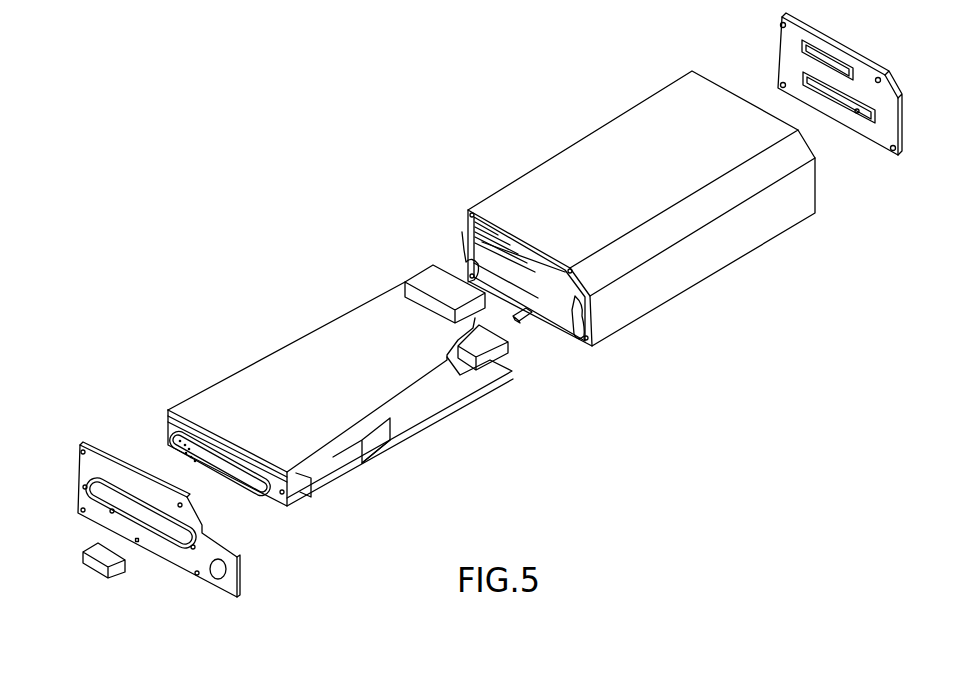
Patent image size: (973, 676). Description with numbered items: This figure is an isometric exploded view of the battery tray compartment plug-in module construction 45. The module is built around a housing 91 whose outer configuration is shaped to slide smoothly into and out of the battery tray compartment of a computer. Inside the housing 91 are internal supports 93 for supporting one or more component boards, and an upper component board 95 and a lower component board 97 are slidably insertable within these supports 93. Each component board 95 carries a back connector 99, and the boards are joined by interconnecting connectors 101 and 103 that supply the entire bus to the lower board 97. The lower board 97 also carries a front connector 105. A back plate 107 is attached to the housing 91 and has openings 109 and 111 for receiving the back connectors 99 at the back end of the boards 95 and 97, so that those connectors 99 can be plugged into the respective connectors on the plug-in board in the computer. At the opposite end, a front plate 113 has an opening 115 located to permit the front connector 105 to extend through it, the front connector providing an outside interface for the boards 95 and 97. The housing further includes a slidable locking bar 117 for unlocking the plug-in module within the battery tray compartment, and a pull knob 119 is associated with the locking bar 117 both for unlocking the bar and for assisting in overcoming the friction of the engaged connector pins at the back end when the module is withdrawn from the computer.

The battery tray compartment plug-in module construction 45 is at (450, 110).
The housing 91 is at (636, 116).
The internal supports 93 is at (466, 262).
The upper component board 95 is at (328, 332).
The lower component board 97 is at (417, 420).
The back connector 99 is at (423, 278).
The interconnecting connector 101 is at (382, 432).
The interconnecting connector 103 is at (380, 447).
The front connector 105 is at (265, 497).
The back plate 107 is at (898, 90).
The opening 109 is at (857, 113).
The opening 111 is at (827, 62).
The front plate 113 is at (98, 452).
The opening 115 is at (110, 512).
The slidable locking bar 117 is at (524, 323).
The pull knob 119 is at (117, 568).